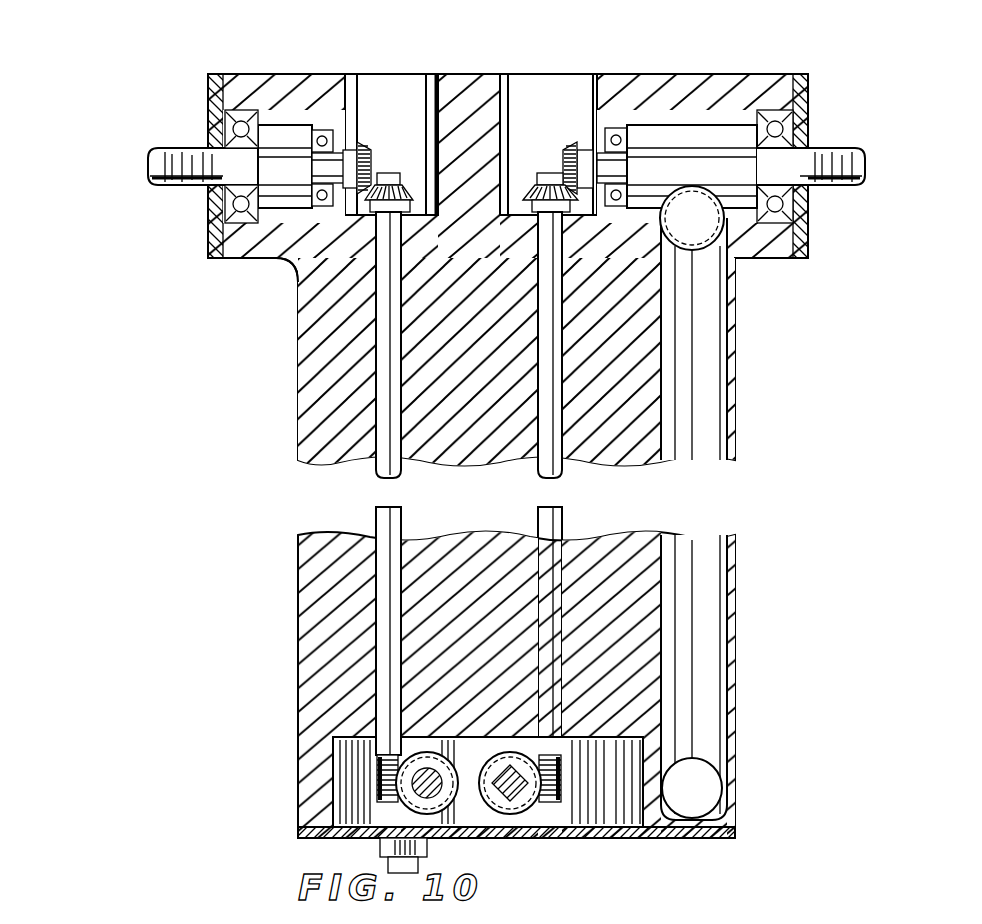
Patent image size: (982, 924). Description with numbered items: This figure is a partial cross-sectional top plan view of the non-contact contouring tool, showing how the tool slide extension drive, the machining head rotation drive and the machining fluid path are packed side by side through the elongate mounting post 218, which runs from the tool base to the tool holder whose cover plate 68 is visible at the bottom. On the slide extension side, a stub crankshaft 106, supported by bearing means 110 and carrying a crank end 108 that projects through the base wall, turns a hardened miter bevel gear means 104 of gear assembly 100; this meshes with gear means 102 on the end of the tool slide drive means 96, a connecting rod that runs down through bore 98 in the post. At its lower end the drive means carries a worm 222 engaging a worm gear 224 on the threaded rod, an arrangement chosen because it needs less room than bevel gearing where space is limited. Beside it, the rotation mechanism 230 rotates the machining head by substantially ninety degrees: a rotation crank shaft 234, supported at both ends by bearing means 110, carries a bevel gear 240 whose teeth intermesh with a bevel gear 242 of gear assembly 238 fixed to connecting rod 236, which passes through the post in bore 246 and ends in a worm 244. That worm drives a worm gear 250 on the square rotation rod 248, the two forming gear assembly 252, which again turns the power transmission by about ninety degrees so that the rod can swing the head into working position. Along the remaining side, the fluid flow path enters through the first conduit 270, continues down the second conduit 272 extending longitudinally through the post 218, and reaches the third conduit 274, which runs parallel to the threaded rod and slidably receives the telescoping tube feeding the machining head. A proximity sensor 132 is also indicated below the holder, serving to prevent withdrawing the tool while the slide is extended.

The cover plate 68 is at (705, 845).
The tool slide drive means (connecting rod) 96 is at (402, 512).
The bore 98 is at (375, 522).
The gear assembly 100 is at (415, 108).
The gear means 102 is at (300, 276).
The gear means 104 is at (388, 168).
The stub crankshaft 106 is at (270, 160).
The crank end 108 is at (148, 175).
The bearing means 110 is at (225, 118).
The proximity sensor 132 is at (380, 848).
The mounting post 218 is at (298, 596).
The worm 222 is at (380, 765).
The worm gear 224 is at (380, 786).
The rotation mechanism 230 is at (568, 514).
The rotation crank shaft 234 is at (700, 165).
The connecting rod 236 is at (537, 518).
The gear assembly 238 is at (556, 146).
The bevel gear 240 is at (549, 170).
The bevel gear 242 is at (585, 150).
The worm 244 is at (561, 795).
The bore 246 is at (540, 478).
The square rotation rod 248 is at (440, 812).
The worm gear 250 is at (520, 810).
The gear assembly 252 is at (502, 798).
The first conduit 270 is at (712, 235).
The second conduit 272 is at (718, 405).
The third conduit 274 is at (720, 790).